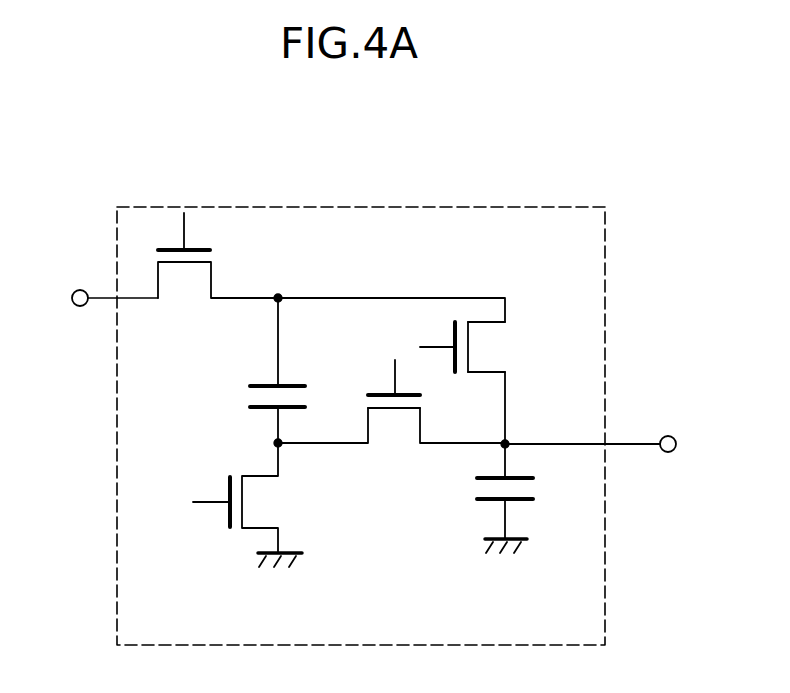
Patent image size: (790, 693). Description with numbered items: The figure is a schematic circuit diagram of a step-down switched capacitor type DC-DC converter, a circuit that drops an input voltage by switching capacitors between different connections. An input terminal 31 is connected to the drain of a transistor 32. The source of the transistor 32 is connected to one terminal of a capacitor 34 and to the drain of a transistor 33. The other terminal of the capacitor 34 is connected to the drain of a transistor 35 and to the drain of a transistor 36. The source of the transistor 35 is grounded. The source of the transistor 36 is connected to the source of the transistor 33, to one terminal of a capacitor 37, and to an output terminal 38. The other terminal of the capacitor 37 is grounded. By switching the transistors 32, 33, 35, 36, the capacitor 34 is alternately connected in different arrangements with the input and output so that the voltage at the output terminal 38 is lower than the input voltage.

The input terminal 31 is at (80, 290).
The transistor 32 is at (213, 254).
The transistor 33 is at (498, 347).
The capacitor 34 is at (250, 402).
The transistor 35 is at (242, 528).
The transistor 36 is at (395, 440).
The capacitor 37 is at (533, 490).
The output terminal 38 is at (668, 436).